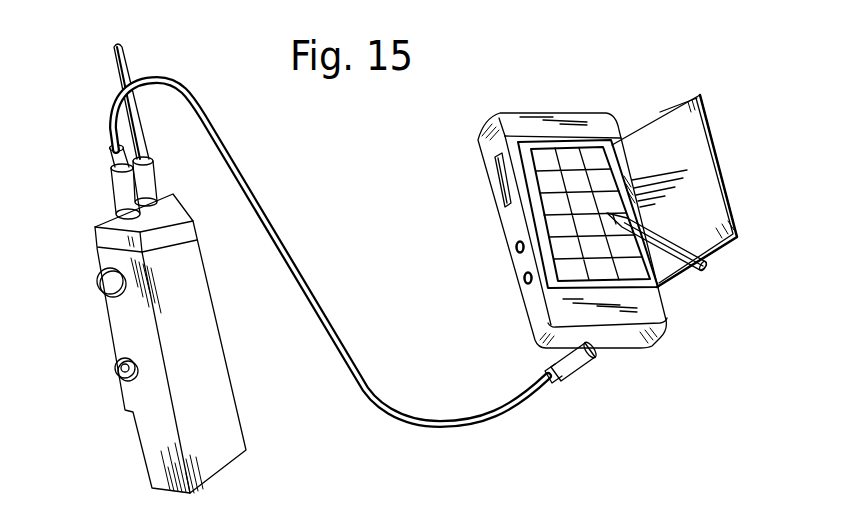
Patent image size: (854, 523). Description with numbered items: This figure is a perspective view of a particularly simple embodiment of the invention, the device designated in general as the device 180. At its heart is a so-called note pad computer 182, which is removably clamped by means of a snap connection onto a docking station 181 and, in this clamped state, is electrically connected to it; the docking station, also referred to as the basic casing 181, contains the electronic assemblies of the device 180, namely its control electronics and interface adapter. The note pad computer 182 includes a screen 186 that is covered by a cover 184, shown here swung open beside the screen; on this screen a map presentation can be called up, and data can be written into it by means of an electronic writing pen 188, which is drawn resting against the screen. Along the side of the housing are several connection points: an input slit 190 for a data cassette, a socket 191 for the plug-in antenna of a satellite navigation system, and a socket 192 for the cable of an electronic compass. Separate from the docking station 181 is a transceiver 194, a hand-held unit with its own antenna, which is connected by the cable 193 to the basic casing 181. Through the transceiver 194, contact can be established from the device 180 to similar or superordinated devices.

The device 180 is at (575, 102).
The docking station 181 is at (535, 318).
The note pad computer 182 is at (533, 137).
The cover 184 is at (697, 143).
The display screen 186 is at (593, 162).
The electronic writing pen 188 is at (708, 268).
The input slit 190 is at (497, 174).
The socket 191 is at (515, 245).
The socket 192 is at (523, 280).
The cable 193 is at (338, 342).
The transceiver 194 is at (228, 428).